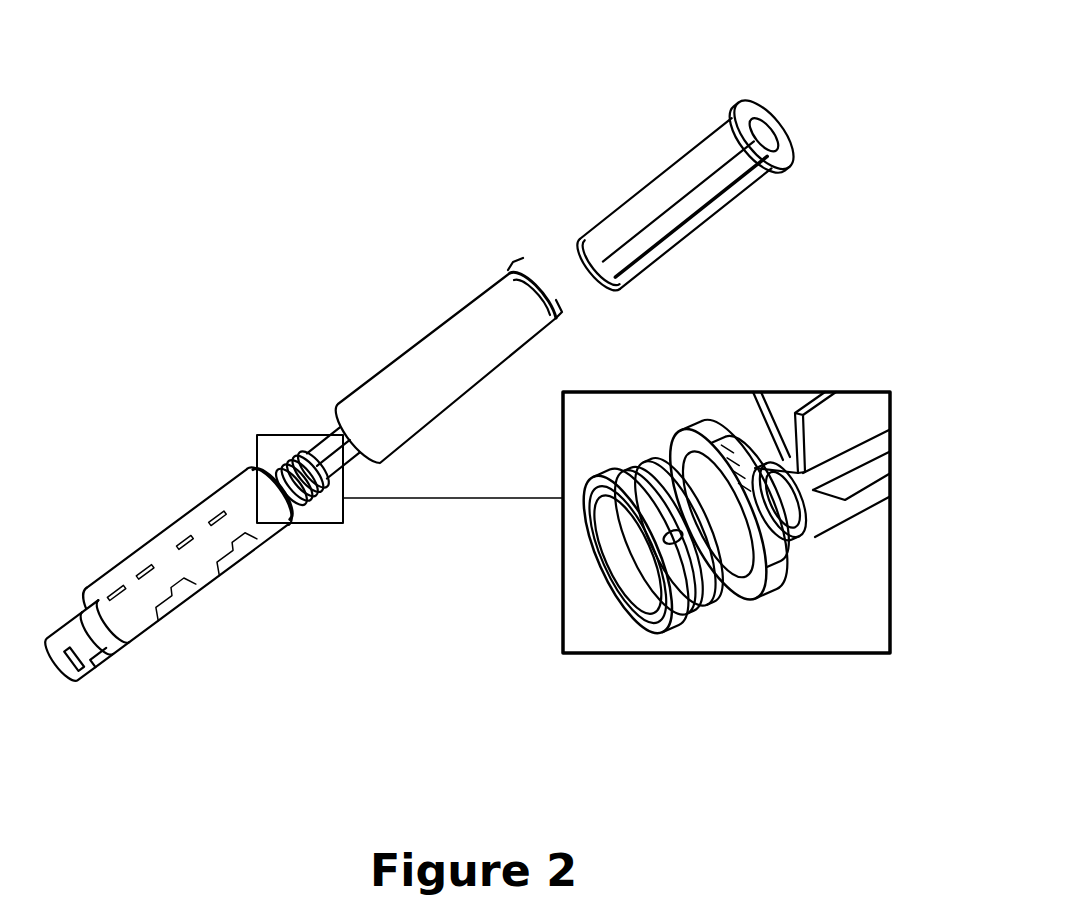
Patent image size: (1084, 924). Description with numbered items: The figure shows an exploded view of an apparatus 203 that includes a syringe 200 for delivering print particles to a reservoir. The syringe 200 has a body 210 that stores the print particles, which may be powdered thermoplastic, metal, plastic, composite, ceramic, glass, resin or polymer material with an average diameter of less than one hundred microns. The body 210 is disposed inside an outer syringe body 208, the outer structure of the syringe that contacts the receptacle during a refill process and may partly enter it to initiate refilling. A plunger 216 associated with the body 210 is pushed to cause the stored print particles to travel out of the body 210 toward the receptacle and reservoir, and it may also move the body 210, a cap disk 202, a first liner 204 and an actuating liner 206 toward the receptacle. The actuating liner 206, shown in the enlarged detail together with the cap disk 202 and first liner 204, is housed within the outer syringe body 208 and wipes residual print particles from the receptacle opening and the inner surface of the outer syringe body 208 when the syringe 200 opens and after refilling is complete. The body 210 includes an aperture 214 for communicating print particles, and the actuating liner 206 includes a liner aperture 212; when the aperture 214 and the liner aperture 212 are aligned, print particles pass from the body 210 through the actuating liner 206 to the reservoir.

The syringe 200 is at (798, 115).
The cap disk 202 is at (665, 627).
The apparatus 203 is at (345, 158).
The first liner 204 is at (697, 627).
The actuating liner 206 is at (737, 597).
The outer syringe body 208 is at (167, 527).
The body 210 is at (447, 317).
The liner aperture 212 is at (673, 535).
The aperture 214 is at (787, 507).
The plunger 216 is at (667, 170).